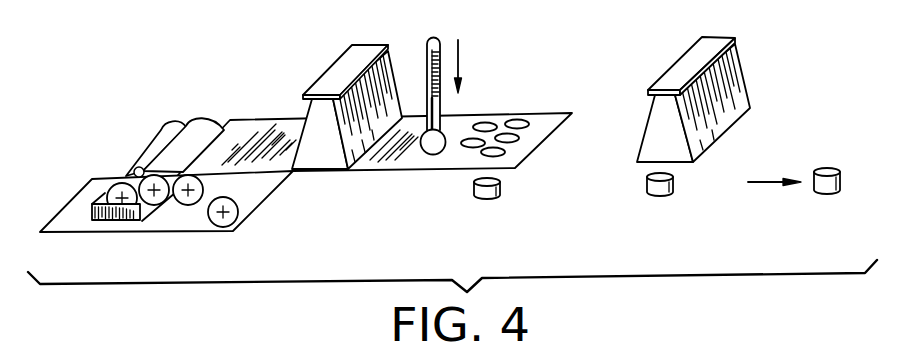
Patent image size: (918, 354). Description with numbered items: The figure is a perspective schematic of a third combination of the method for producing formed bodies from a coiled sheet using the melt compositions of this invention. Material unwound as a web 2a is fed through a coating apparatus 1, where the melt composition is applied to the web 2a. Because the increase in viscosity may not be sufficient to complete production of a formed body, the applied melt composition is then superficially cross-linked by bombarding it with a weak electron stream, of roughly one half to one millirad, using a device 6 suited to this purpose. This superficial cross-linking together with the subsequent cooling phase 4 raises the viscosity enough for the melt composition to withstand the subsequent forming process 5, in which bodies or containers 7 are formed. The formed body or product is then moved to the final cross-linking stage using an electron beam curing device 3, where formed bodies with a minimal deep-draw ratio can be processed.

The coating apparatus 1 is at (202, 123).
The web 2a is at (255, 120).
The electron beam curing device 3 is at (705, 157).
The cooling device 4 is at (428, 153).
The forming station 5 is at (487, 123).
The weak electron stream device 6 is at (330, 160).
The formed bodies or containers 7 is at (829, 198).